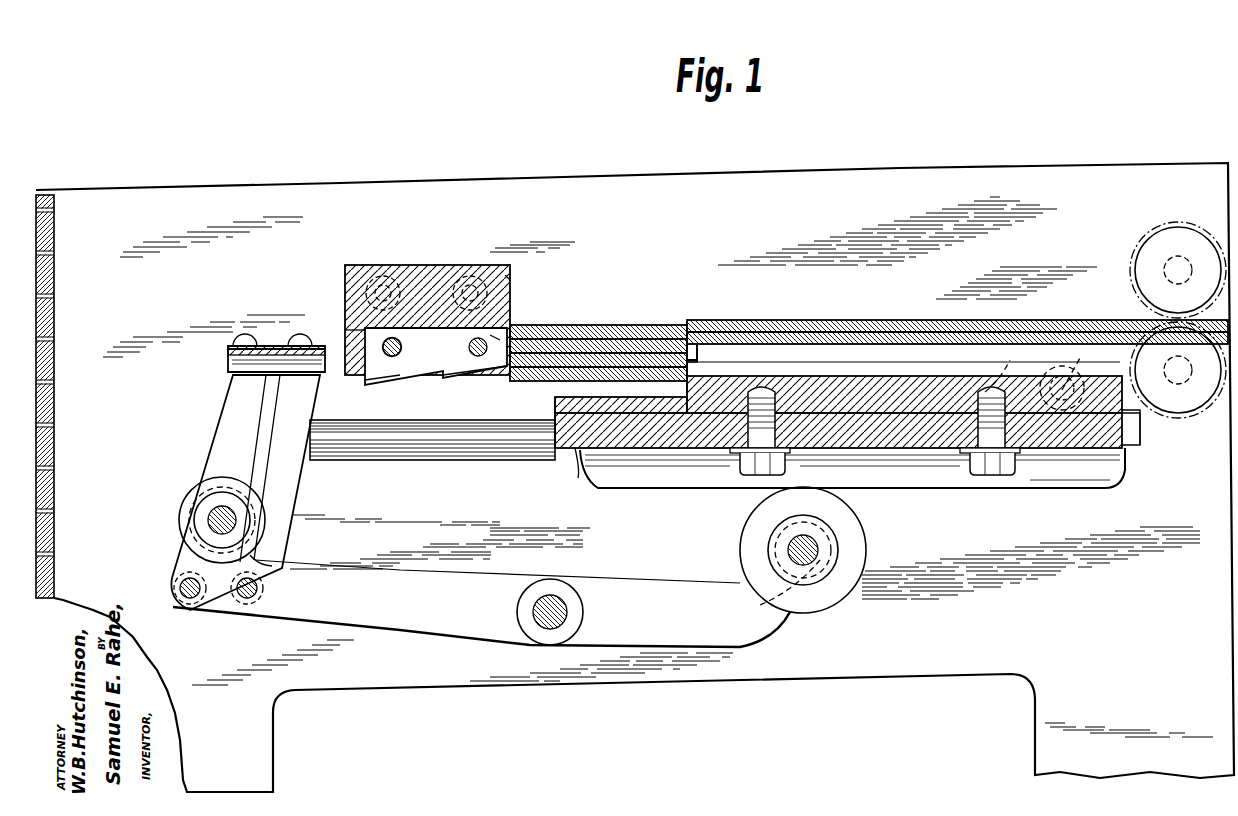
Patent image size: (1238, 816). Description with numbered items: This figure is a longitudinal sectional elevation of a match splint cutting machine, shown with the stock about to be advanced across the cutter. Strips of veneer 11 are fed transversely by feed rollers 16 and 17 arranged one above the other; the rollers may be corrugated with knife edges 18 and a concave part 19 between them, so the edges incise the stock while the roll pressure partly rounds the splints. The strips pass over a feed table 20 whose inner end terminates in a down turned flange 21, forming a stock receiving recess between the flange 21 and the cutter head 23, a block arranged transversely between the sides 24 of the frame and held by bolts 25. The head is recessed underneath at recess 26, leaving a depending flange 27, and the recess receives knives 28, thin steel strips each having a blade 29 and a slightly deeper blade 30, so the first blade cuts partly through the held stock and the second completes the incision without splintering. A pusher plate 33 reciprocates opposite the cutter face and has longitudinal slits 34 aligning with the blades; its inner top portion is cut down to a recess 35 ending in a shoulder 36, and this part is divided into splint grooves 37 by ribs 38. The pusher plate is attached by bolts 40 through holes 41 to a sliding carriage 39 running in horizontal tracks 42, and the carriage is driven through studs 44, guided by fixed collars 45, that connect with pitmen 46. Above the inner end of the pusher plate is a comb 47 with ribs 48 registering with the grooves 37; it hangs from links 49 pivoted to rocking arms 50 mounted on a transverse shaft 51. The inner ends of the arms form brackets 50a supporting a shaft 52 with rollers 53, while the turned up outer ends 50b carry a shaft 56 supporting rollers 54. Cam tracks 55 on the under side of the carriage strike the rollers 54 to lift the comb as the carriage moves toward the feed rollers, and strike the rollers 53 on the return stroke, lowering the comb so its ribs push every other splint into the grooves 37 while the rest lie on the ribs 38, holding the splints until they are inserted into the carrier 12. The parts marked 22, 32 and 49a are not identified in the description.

The strips of veneer 11 is at (620, 328).
The carrier 12 is at (52, 200).
The feed roller 16 is at (1178, 226).
The feed roller 17 is at (1188, 414).
The knife edges 18 is at (1148, 238).
The concave part 19 is at (1175, 414).
The feed table 20 is at (922, 340).
The down turned flange 21 is at (700, 353).
The shoulder 22 is at (697, 340).
The cutter head 23 is at (425, 265).
The sides of the frame 24 is at (505, 187).
The bolts 25 is at (512, 276).
The recess 26 is at (500, 330).
The depending flange 27 is at (352, 342).
The knives 28 is at (498, 340).
The blade 29 is at (477, 356).
The blade 30 is at (390, 372).
The screw 32 is at (403, 356).
The pusher plate 33 is at (840, 392).
The longitudinal slits 34 is at (825, 376).
The recess 35 is at (645, 410).
The shoulder or abutment 36 is at (690, 400).
The splint grooves 37 is at (577, 456).
The ribs 38 is at (553, 390).
The sliding carriage 39 is at (1118, 430).
The bolts 40 is at (1005, 456).
The holes 41 is at (990, 440).
The horizontal tracks 42 is at (448, 456).
The studs 44 is at (1080, 356).
The fixed collars 45 is at (1055, 368).
The pitmen 46 is at (1012, 330).
The comb or keeper plate 47 is at (282, 344).
The ribs 48 is at (237, 370).
The links 49 is at (290, 487).
The arm screws 49a is at (245, 600).
The rocking arms 50 is at (456, 640).
The brackets 50a is at (262, 554).
The turned up outer ends 50b is at (793, 615).
The transverse shaft 51 is at (565, 597).
The shaft 52 is at (208, 518).
The rollers 53 is at (183, 508).
The rollers 54 is at (868, 548).
The cam tracks 55 is at (1045, 478).
The shaft 56 is at (590, 482).